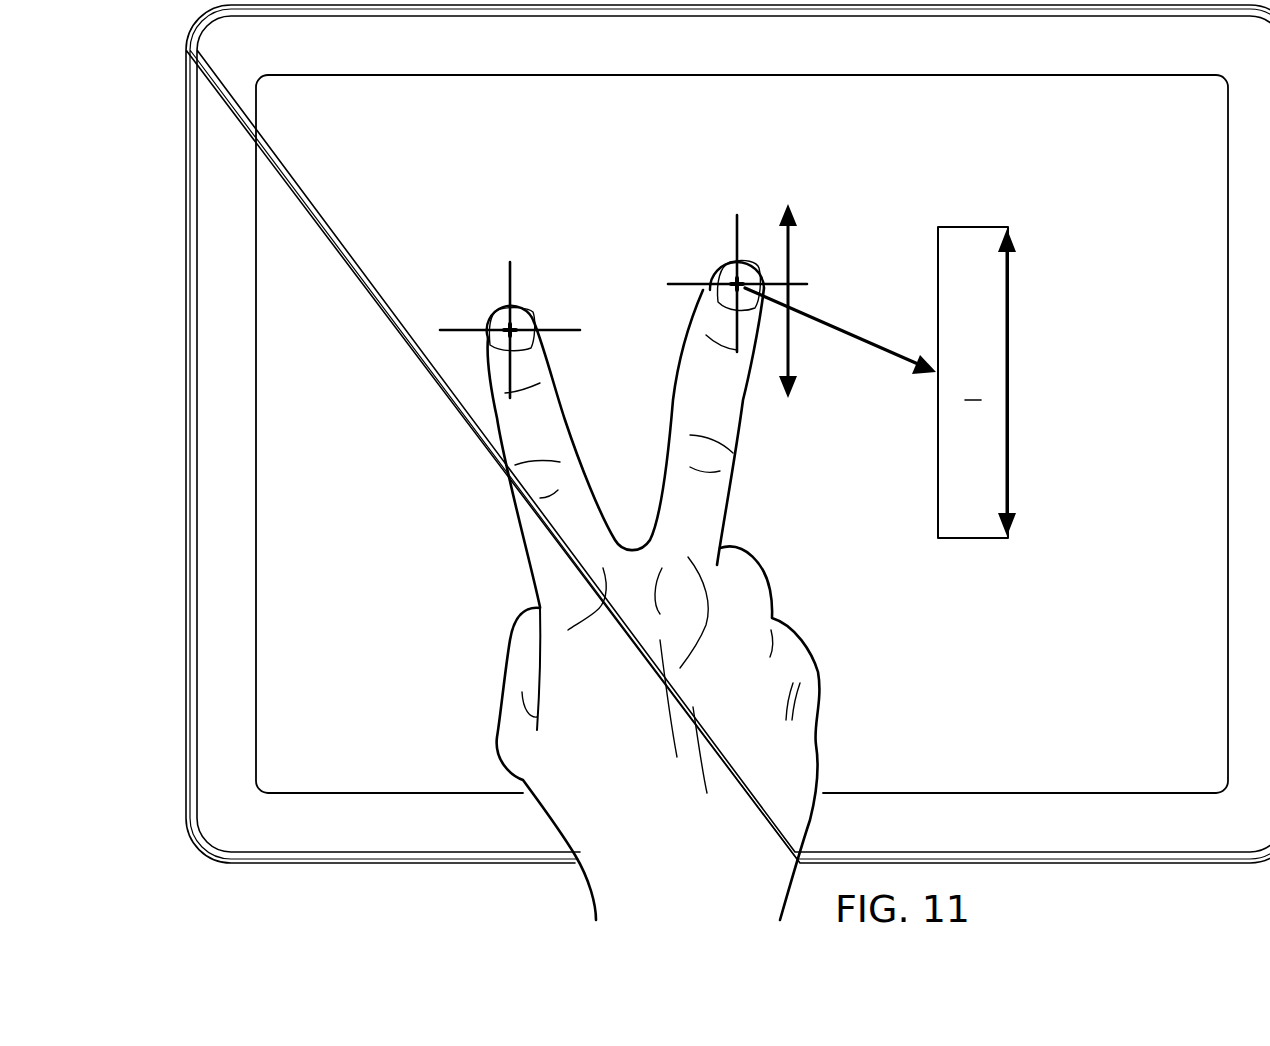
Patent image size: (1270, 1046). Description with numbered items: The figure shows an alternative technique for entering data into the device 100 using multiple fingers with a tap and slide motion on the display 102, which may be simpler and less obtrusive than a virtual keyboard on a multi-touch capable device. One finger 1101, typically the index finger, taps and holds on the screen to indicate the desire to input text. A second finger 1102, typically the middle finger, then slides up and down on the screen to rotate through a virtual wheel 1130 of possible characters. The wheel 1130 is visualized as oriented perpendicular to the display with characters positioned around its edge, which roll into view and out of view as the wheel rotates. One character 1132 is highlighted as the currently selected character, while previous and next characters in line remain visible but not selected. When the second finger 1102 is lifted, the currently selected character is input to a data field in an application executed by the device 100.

The device 100 is at (186, 155).
The touch screen display 102 is at (742, 434).
The one finger 1101 is at (497, 318).
The second finger 1102 is at (725, 278).
The virtual wheel 1130 is at (975, 225).
The highlighted character 1132 is at (990, 389).